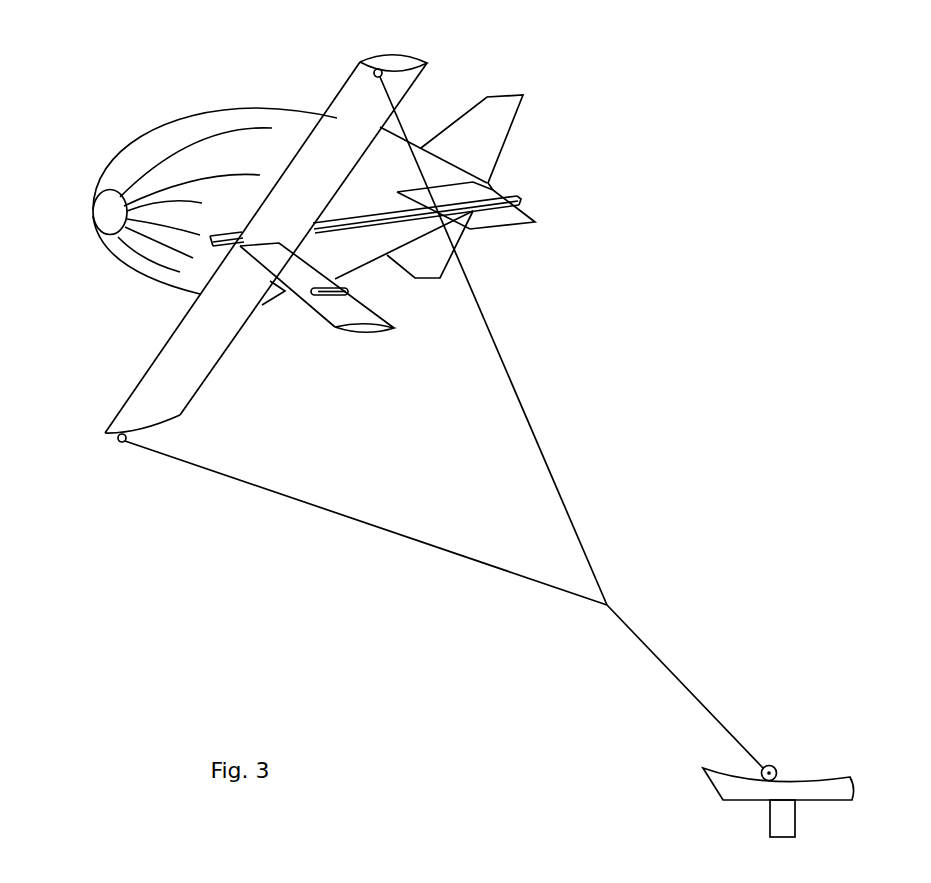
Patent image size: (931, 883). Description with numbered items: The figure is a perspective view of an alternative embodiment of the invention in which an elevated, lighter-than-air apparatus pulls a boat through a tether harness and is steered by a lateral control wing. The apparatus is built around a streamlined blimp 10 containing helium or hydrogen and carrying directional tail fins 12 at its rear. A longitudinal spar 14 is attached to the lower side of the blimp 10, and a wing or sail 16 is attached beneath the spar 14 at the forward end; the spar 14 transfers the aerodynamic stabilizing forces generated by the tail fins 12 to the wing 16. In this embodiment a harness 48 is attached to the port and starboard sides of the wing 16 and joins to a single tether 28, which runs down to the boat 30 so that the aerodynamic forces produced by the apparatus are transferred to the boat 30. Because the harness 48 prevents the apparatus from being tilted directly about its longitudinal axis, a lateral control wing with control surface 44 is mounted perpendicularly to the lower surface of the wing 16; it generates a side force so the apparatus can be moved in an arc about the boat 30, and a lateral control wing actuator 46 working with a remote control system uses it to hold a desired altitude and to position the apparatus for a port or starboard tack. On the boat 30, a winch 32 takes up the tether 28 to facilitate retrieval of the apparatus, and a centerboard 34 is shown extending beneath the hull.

The blimp 10 is at (163, 141).
The wing or sail 16 is at (357, 112).
The directional tail fins 12 is at (480, 123).
The spar 14 is at (403, 218).
The lateral control wing with control surface 44 is at (342, 311).
The lateral control wing actuator 46 is at (323, 296).
The harness 48 is at (420, 540).
The tether 28 is at (685, 685).
The boat 30 is at (832, 790).
The winch 32 is at (774, 767).
The centerboard 34 is at (787, 820).